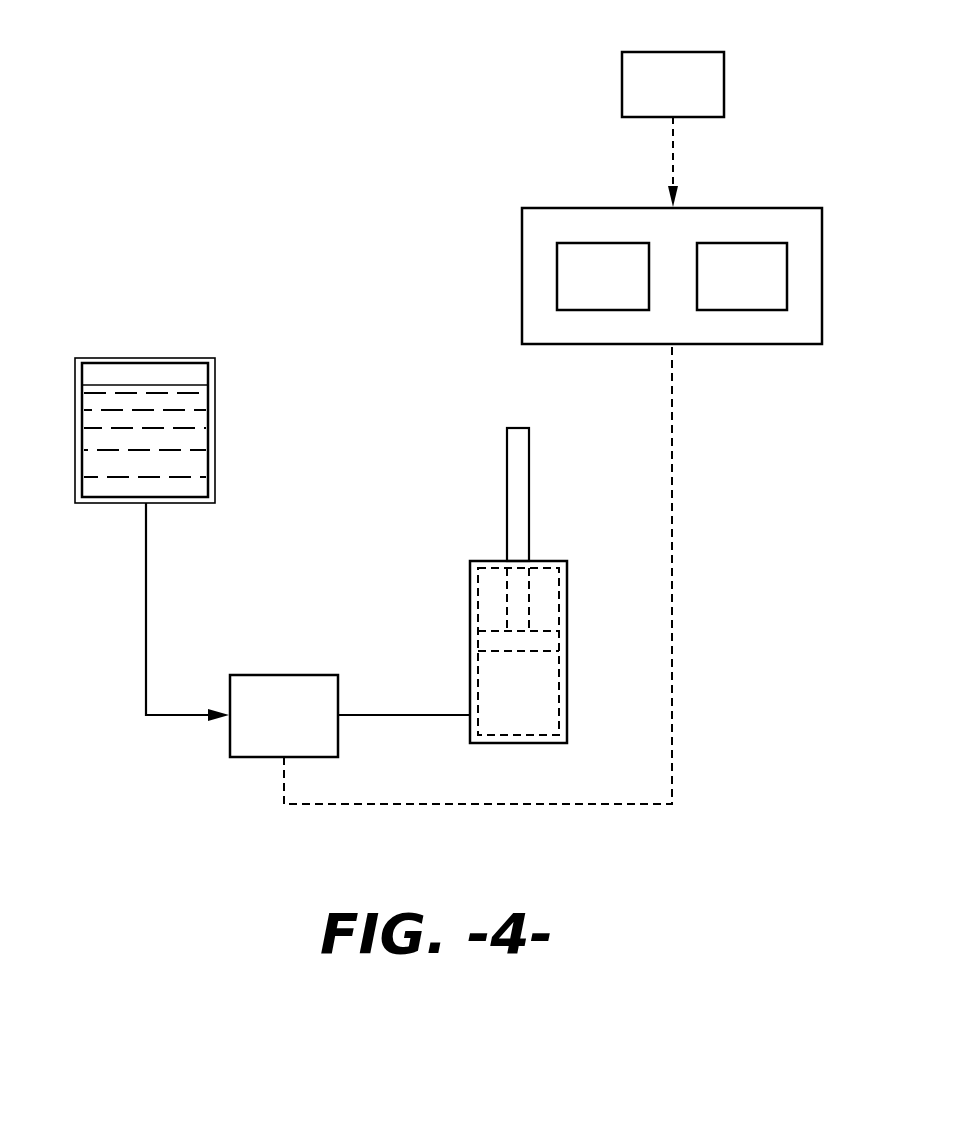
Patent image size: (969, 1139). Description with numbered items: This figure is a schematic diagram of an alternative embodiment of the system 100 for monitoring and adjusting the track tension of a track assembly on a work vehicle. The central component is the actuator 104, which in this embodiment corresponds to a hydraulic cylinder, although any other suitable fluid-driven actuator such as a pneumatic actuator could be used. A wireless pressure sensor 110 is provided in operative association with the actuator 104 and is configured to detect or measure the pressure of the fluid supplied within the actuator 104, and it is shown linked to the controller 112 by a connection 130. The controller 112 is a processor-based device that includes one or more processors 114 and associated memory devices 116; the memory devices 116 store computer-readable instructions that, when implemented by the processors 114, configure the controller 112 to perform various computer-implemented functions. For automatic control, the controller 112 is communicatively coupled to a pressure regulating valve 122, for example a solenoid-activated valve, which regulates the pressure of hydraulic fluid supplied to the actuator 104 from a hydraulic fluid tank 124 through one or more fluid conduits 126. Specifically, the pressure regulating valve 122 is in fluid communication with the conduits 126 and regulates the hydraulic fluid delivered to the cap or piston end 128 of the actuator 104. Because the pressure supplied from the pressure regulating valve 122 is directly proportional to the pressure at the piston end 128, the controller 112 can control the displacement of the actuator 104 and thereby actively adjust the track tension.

The system 100 is at (234, 121).
The actuator 104 is at (592, 554).
The wireless pressure sensor 110 is at (695, 100).
The controller 112 is at (512, 240).
The processor 114 is at (626, 291).
The memory device 116 is at (765, 291).
The pressure regulating valve 122 is at (307, 731).
The hydraulic fluid tank 124 is at (217, 401).
The fluid conduit 126 is at (178, 718).
The piston end 128 is at (542, 702).
The communication link 130 is at (673, 143).